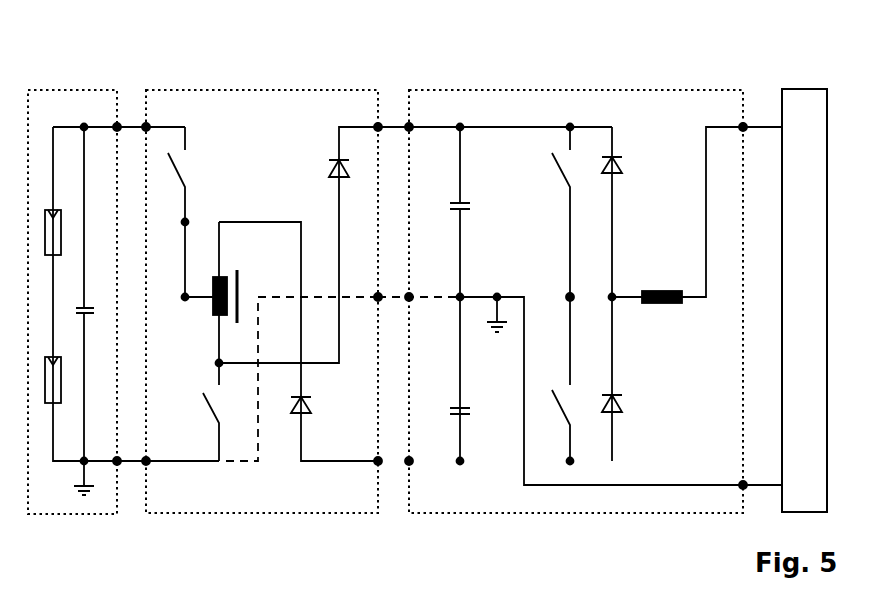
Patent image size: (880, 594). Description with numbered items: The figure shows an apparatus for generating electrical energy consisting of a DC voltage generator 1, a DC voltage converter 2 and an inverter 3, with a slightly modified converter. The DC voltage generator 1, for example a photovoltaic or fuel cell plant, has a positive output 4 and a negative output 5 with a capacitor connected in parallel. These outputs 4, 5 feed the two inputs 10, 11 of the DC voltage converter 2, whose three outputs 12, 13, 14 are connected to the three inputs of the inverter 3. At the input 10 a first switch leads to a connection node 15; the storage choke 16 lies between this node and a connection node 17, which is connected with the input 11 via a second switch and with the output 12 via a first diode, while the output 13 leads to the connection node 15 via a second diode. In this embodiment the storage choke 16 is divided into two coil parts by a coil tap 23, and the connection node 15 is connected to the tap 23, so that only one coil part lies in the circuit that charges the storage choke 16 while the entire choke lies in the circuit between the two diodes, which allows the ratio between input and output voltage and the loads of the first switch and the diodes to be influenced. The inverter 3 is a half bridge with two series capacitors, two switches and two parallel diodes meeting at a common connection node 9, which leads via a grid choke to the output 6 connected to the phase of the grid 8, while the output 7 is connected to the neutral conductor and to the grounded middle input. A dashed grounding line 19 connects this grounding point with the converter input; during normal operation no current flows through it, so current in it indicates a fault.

The DC voltage generator 1 is at (57, 90).
The DC voltage converter 2 is at (270, 90).
The inverter 3 is at (568, 90).
The output 4 is at (117, 127).
The output 5 is at (117, 461).
The output 6 is at (744, 125).
The output 7 is at (743, 485).
The grid 8 is at (808, 88).
The connection node 9 is at (570, 297).
The input 10 is at (146, 127).
The input 11 is at (146, 461).
The output 12 is at (378, 127).
The output 13 is at (378, 461).
The output 14 is at (376, 292).
The connection node 15 is at (185, 222).
The storage choke 16 is at (242, 296).
The connection node 17 is at (219, 363).
The grounding line 19 is at (258, 440).
The coil tap 23 is at (185, 297).